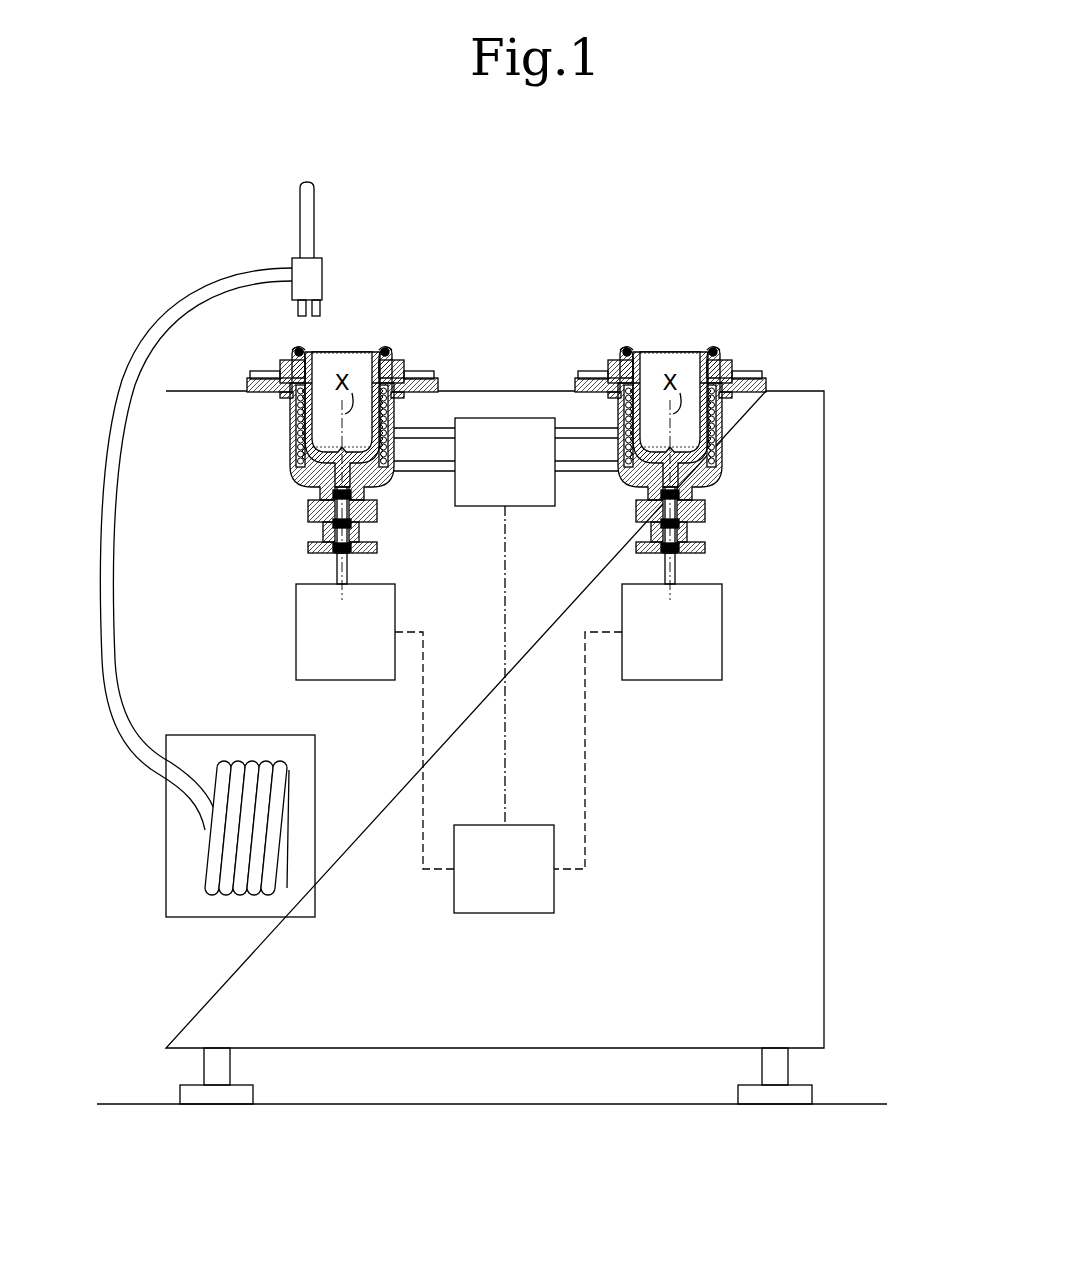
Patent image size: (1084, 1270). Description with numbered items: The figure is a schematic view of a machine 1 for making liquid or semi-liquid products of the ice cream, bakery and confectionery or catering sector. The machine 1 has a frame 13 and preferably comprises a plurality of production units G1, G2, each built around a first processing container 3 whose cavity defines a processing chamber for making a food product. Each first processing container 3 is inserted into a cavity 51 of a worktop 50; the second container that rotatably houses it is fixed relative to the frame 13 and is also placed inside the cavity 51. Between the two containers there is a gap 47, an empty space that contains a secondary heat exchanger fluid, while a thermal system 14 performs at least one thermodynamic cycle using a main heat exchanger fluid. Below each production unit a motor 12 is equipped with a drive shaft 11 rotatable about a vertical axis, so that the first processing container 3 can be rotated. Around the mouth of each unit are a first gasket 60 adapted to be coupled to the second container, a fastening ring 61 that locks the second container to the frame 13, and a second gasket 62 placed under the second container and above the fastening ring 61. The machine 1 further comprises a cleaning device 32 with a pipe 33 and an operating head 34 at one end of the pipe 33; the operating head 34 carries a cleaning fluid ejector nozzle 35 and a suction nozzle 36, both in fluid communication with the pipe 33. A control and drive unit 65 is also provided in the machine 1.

The machine 1 is at (147, 200).
The first processing container 3 is at (398, 345).
The drive shaft 11 is at (355, 565).
The motor 12 is at (509, 632).
The frame 13 is at (827, 427).
The thermal system 14 is at (506, 462).
The cleaning device 32 is at (287, 250).
The pipe 33 is at (115, 372).
The operating head 34 is at (283, 172).
The cleaning fluid ejector nozzle 35 is at (290, 307).
The suction nozzle 36 is at (331, 302).
The gap 47 is at (317, 473).
The worktop 50 is at (797, 387).
The cavity 51 is at (307, 347).
The first gasket 60 is at (767, 367).
The fastening ring 61 is at (738, 365).
The second gasket 62 is at (717, 362).
The control and drive unit 65 is at (508, 709).
The production unit G1 is at (352, 332).
The production unit G2 is at (641, 300).